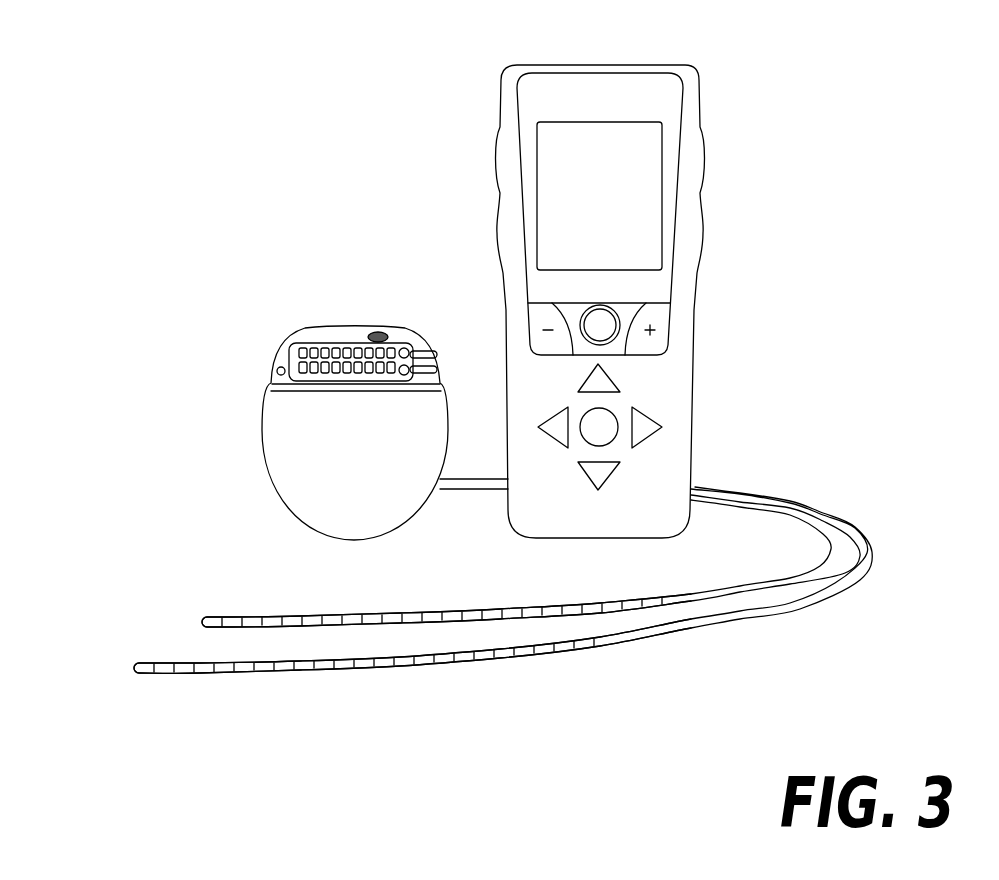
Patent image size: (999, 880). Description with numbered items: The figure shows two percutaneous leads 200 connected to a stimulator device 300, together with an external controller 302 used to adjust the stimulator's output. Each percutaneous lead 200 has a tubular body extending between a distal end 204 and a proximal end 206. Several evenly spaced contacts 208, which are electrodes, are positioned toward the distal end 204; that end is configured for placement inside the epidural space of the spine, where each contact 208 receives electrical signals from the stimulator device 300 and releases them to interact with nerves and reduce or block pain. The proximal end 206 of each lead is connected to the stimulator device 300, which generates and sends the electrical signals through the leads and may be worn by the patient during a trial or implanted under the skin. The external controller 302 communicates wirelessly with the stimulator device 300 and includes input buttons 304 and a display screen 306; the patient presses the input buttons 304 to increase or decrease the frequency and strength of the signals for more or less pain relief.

The percutaneous lead 200 is at (827, 547).
The distal end 204 is at (208, 587).
The proximal end 206 is at (496, 470).
The contacts 208 is at (153, 663).
The stimulator device 300 is at (245, 377).
The external controller 302 is at (726, 107).
The input buttons 304 is at (603, 378).
The display screen 306 is at (627, 222).